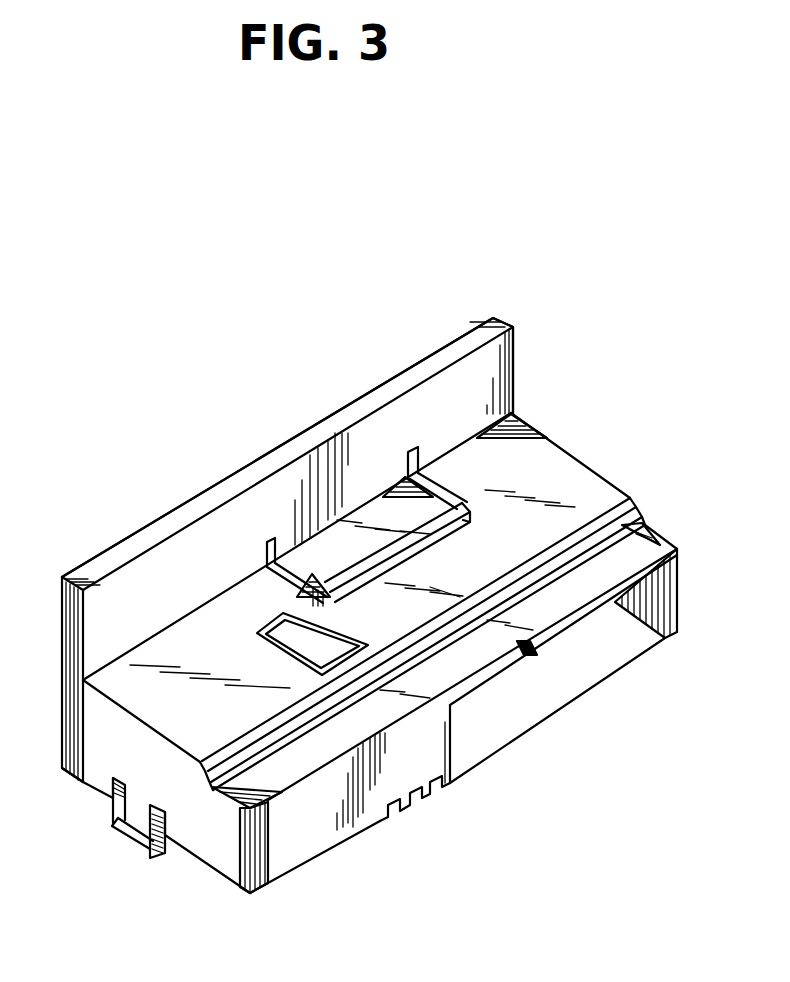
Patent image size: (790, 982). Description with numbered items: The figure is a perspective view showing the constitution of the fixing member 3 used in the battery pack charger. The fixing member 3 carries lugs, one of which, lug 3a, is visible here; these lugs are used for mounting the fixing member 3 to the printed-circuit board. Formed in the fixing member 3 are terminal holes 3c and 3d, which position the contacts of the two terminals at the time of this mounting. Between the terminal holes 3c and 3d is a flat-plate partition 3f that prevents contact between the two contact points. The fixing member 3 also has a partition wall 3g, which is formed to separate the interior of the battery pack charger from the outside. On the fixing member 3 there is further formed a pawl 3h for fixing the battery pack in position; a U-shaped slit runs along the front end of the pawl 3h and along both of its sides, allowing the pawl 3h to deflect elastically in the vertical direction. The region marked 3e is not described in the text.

The fixing member 3 is at (413, 301).
The lug 3a is at (122, 832).
The terminal hole 3c is at (262, 627).
The terminal hole 3d is at (266, 566).
The shelf surface 3e is at (558, 512).
The flat-plate partition 3f is at (351, 658).
The partition wall 3g is at (328, 427).
The pawl 3h is at (437, 528).